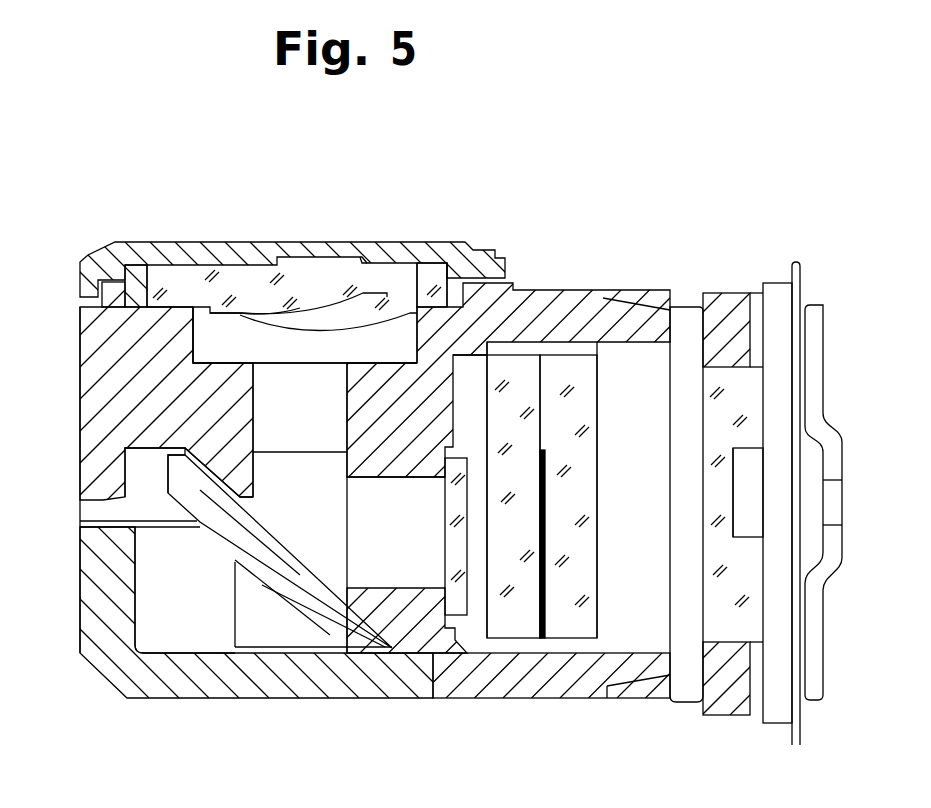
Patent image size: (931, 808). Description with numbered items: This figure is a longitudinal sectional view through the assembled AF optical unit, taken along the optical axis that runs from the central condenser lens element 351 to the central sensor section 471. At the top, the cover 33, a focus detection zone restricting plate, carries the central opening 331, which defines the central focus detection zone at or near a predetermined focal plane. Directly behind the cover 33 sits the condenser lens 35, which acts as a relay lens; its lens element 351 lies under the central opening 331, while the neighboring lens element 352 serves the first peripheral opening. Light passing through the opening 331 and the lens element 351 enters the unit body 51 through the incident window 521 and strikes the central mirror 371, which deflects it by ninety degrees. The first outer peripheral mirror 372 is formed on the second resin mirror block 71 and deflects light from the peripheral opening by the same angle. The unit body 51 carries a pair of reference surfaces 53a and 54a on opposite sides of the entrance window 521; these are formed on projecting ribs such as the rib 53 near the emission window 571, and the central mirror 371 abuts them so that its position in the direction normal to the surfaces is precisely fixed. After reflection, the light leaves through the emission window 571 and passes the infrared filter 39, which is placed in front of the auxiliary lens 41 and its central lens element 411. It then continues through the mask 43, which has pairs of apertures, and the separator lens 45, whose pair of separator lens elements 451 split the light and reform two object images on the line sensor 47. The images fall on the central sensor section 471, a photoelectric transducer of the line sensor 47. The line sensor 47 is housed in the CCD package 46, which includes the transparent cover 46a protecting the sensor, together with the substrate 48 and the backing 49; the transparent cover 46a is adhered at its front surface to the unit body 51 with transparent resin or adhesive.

The cover 33 is at (138, 242).
The condenser lens 35 is at (193, 264).
The condenser lens element 351 is at (240, 312).
The incident window 521 is at (256, 413).
The central opening 331 is at (361, 256).
The condenser lens element 352 is at (390, 310).
The auxiliary lens 41 is at (517, 370).
The auxiliary lens element 411 is at (488, 483).
The mask 43 is at (543, 618).
The separator lens 45 is at (563, 363).
The separator lens elements 451 is at (595, 480).
The CCD package 46 is at (720, 291).
The transparent cover 46a is at (702, 397).
The line sensor 47 is at (753, 478).
The sensor section 471 is at (730, 497).
The substrate 48 is at (798, 264).
The backing 49 is at (814, 336).
The unit body 51 is at (95, 375).
The projecting rib 53 is at (231, 460).
The reference surface 53a is at (203, 482).
The reference surface 54a is at (308, 568).
The emission window 571 is at (361, 522).
The infrared filter 39 is at (447, 546).
The second resin mirror block 71 is at (160, 695).
The central mirror 371 is at (312, 645).
The first outer peripheral mirror 372 is at (233, 662).